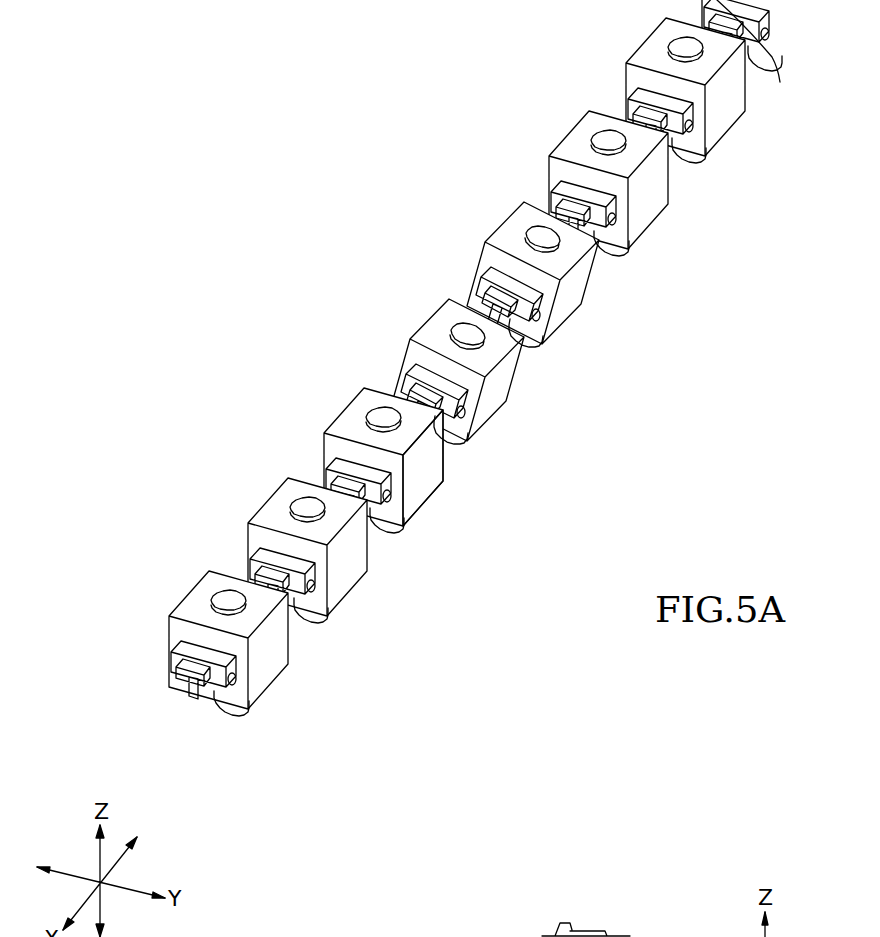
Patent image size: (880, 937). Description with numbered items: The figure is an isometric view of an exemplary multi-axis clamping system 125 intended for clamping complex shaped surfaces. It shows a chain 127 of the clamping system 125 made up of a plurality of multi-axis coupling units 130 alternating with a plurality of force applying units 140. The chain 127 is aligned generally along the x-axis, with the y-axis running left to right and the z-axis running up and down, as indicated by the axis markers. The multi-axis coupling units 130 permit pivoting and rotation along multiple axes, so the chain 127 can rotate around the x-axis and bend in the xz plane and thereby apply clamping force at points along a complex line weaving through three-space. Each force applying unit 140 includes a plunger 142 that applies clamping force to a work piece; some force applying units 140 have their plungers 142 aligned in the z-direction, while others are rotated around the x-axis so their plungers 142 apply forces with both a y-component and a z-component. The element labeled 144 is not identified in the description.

The clamping system 125 is at (436, 468).
The chain 127 is at (513, 183).
The multi-axis coupling unit 130 is at (385, 368).
The force applying unit 140 is at (323, 405).
The plunger 142 is at (393, 532).
The side surface of block 144 is at (422, 473).